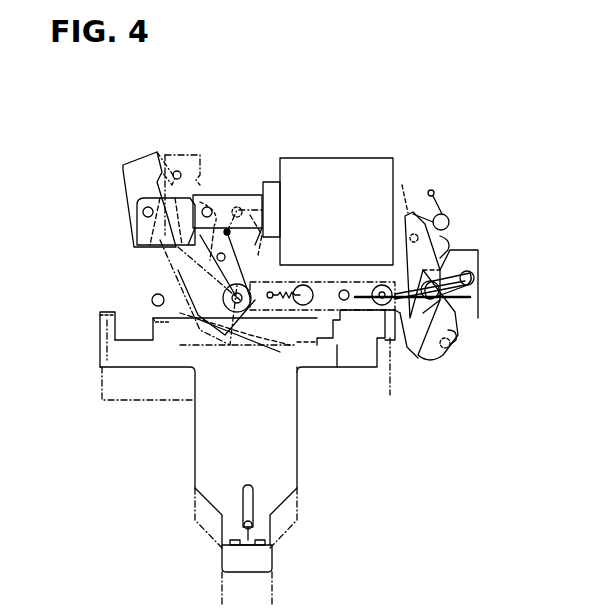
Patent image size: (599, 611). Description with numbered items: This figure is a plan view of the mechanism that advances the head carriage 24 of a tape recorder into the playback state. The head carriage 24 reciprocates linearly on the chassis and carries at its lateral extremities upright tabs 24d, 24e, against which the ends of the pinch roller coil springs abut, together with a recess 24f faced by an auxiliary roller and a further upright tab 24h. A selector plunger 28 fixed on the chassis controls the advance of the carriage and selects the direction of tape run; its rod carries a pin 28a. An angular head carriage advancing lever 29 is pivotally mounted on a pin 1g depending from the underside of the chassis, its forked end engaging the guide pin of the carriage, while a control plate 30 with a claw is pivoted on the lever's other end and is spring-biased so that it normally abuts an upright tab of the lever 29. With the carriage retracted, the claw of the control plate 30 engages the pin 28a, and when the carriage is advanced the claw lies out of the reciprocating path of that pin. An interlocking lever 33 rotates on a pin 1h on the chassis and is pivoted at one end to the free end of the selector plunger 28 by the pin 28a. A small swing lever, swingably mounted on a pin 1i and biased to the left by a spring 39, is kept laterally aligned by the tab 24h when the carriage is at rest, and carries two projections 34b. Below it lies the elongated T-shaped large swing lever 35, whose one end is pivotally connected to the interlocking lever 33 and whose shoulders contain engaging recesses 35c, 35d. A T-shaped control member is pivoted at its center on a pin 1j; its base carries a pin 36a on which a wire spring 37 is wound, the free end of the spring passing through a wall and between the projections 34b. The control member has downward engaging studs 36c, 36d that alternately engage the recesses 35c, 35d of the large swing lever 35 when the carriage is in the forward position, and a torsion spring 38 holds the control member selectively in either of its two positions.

The head carriage 24 is at (297, 458).
The upright tab 24d is at (398, 340).
The upright tab 24e is at (105, 312).
The recess 24f is at (350, 330).
The upright tab 24h is at (325, 308).
The selector plunger 28 is at (336, 193).
The pin 28a is at (212, 205).
The head carriage advancing lever 29 is at (135, 160).
The control plate 30 is at (140, 232).
The interlocking lever 33 is at (275, 215).
The projections 34b is at (378, 232).
The large swing lever 35 is at (474, 252).
The engaging recess 35c is at (450, 236).
The engaging recess 35d is at (460, 340).
The pin 36a is at (478, 275).
The engaging stud 36c is at (428, 268).
The engaging stud 36d is at (456, 352).
The wire spring 37 is at (430, 318).
The torsion spring 38 is at (437, 193).
The spring 39 is at (285, 290).
The pin 1g is at (152, 298).
The pin 1h is at (237, 205).
The pin 1i is at (350, 290).
The pin 1j is at (470, 300).